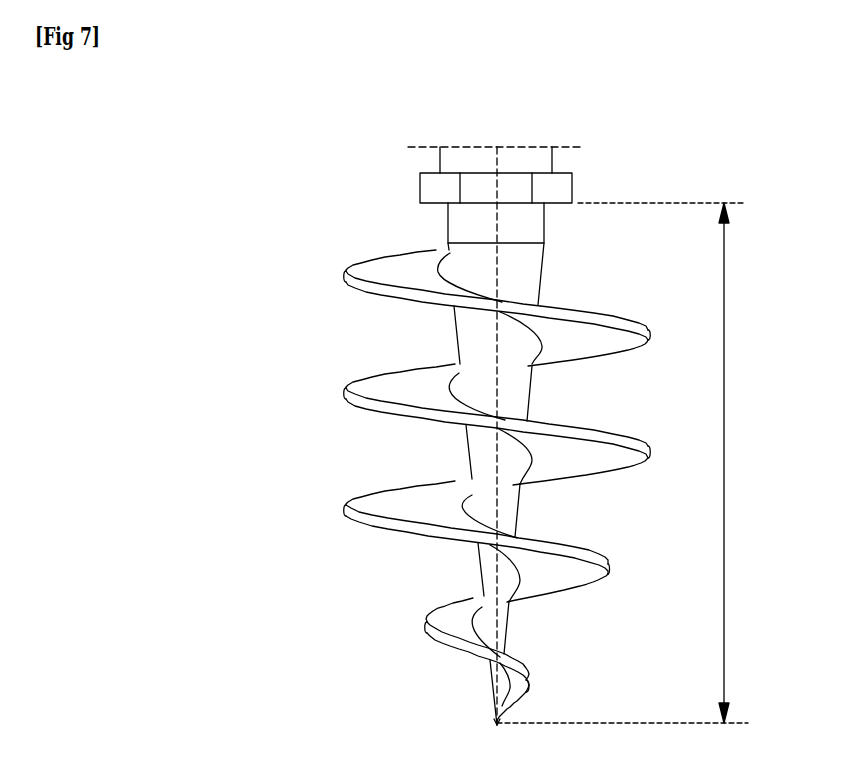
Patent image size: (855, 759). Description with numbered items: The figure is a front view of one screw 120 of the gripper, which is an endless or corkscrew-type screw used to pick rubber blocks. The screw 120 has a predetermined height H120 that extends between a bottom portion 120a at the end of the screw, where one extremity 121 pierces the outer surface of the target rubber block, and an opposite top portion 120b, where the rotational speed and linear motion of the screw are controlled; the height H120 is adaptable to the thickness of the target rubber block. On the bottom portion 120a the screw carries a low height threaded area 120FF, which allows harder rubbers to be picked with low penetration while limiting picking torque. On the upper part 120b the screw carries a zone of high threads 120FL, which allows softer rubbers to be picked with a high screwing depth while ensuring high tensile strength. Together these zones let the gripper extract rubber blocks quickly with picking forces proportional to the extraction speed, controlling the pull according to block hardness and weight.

The screw 120 is at (443, 421).
The top portion 120b is at (391, 225).
The bottom portion 120a is at (385, 643).
The zone of high threads 120FL is at (443, 390).
The low height threaded area 120FF is at (388, 627).
The extremity 121 is at (495, 725).
The height H120 is at (636, 463).